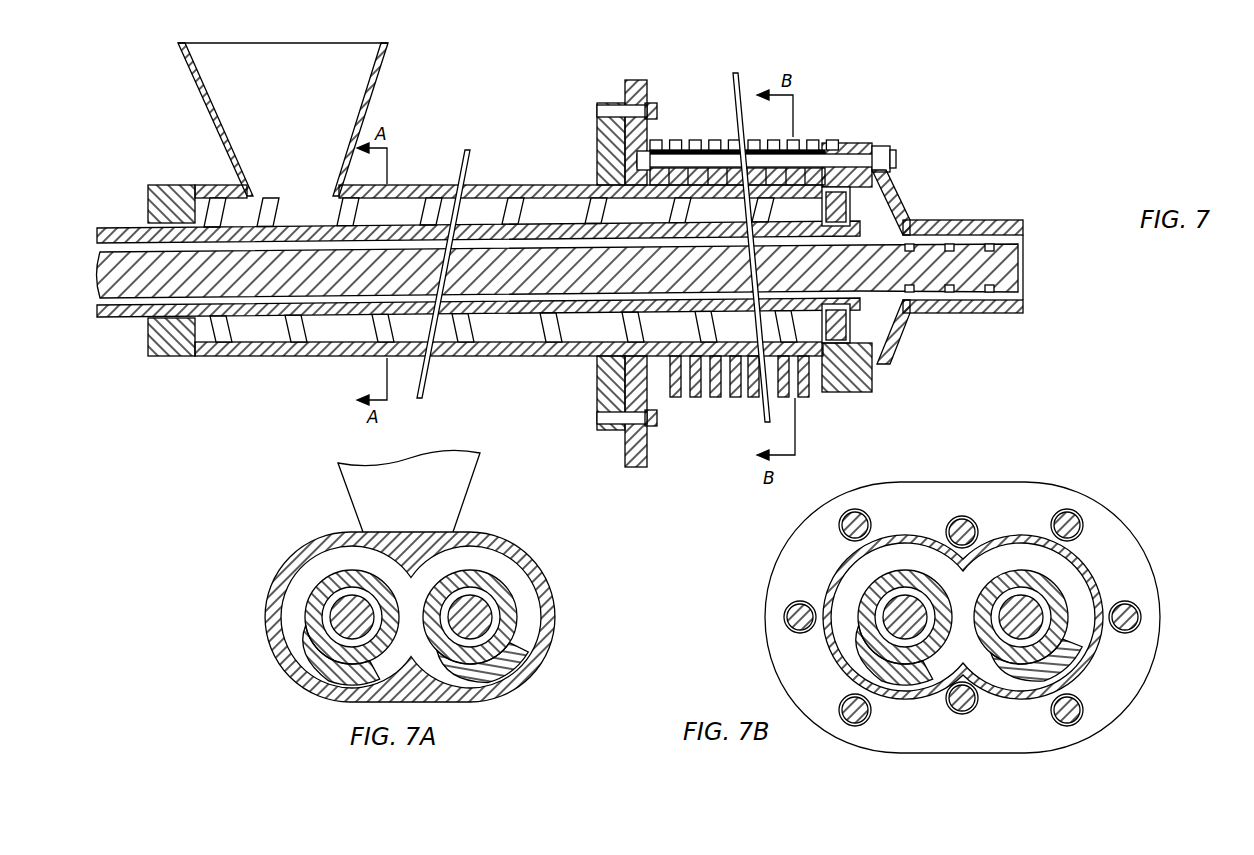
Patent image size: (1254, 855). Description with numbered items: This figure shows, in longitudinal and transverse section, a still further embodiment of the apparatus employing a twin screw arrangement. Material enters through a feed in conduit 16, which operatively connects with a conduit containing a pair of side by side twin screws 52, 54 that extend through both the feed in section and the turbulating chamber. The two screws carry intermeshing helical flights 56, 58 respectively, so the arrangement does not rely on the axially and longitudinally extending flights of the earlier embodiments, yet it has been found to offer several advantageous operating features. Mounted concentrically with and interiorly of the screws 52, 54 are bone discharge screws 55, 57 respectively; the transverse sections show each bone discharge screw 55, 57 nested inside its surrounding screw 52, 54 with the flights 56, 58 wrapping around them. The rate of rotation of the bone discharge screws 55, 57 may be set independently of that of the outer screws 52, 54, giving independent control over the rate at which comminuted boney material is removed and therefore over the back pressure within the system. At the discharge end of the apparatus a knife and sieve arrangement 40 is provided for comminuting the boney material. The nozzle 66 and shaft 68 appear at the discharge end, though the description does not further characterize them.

In FIG. 7, the feed in conduit 16 is at (386, 81).
In FIG. 7, the knife and sieve arrangement 40 is at (860, 204).
In FIG. 7, the nozzle 66 is at (968, 220).
In FIG. 7, the shaft 68 is at (1020, 266).
In FIG. 7A, the screw 52 is at (307, 603).
In FIG. 7A, the screw 54 is at (507, 583).
In FIG. 7A, the bone discharge screw 55 is at (333, 590).
In FIG. 7B, the bone discharge screw 55 is at (880, 596).
In FIG. 7A, the helical flight 56 is at (332, 668).
In FIG. 7A, the bone discharge screw 57 is at (493, 602).
In FIG. 7B, the bone discharge screw 57 is at (1028, 597).
In FIG. 7A, the helical flight 58 is at (520, 637).